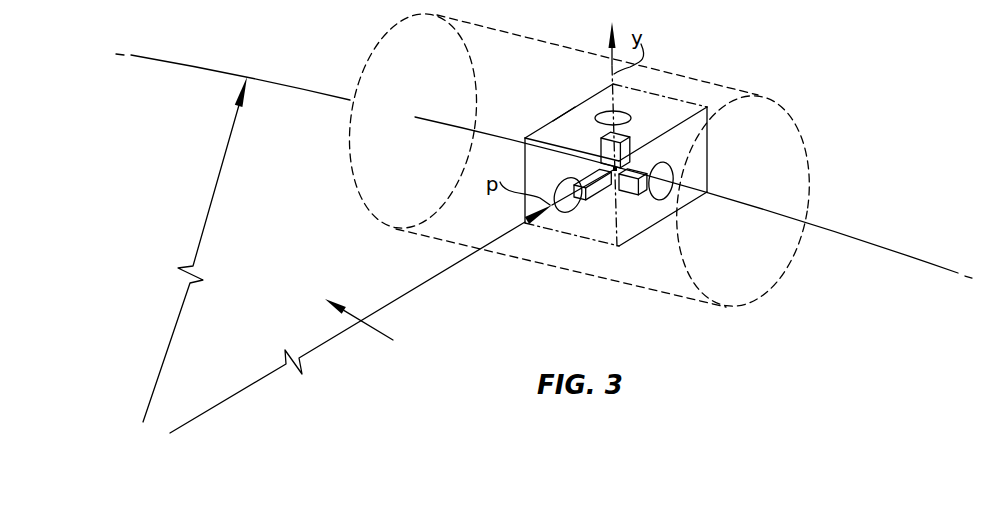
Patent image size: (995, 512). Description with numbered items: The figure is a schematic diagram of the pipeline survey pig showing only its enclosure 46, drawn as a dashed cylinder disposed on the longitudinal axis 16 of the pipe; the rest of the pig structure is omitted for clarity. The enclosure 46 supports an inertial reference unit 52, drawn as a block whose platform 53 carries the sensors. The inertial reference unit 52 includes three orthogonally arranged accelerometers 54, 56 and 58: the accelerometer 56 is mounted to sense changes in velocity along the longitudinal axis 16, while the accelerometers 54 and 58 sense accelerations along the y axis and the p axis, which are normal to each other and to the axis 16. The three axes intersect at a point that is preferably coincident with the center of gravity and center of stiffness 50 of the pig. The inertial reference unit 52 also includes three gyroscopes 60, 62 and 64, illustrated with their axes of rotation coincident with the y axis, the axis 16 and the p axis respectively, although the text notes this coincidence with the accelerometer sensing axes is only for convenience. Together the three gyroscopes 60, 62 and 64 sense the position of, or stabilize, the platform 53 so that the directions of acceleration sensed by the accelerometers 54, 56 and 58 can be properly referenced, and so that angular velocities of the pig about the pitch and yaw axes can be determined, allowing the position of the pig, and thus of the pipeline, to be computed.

The longitudinal axis 16 is at (866, 240).
The enclosure 46 is at (757, 97).
The center of gravity and center of stiffness 50 is at (603, 168).
The inertial reference unit 52 is at (565, 94).
The platform 53 is at (553, 119).
The accelerometer 54 is at (640, 126).
The accelerometer 56 is at (636, 192).
The accelerometer 58 is at (593, 202).
The gyroscope 60 is at (630, 112).
The gyroscope 62 is at (670, 174).
The gyroscope 64 is at (571, 213).